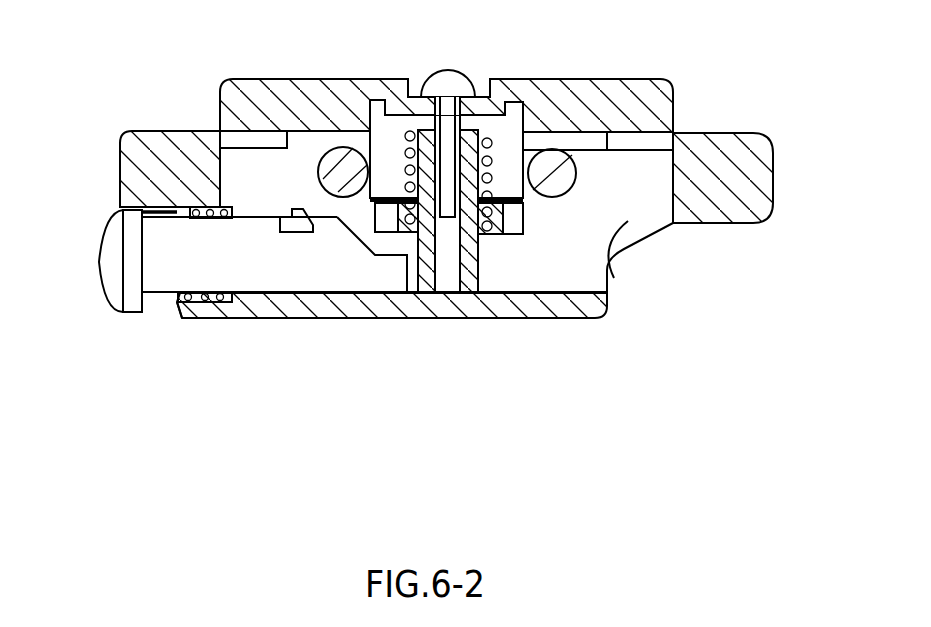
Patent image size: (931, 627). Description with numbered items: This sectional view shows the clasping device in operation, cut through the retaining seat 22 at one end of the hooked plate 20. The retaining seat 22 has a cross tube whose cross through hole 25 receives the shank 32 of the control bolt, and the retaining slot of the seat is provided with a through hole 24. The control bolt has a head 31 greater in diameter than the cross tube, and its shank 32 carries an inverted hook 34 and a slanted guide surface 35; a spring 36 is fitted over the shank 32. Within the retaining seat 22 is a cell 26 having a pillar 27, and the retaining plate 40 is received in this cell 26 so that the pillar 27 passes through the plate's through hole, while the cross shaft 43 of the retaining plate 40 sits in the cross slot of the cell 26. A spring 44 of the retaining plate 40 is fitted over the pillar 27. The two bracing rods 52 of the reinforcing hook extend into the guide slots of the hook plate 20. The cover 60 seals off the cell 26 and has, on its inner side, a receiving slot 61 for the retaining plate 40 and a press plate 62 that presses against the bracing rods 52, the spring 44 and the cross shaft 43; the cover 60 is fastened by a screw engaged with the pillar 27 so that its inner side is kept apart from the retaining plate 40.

The hooked plate 20 is at (777, 162).
The retaining seat 22 is at (578, 320).
The through hole 24 is at (182, 317).
The cross through hole 25 is at (177, 302).
The cell 26 is at (583, 218).
The pillar 27 is at (470, 270).
The head 31 is at (110, 287).
The shank 32 is at (276, 284).
The inverted hook 34 is at (302, 218).
The slanted guide surface 35 is at (358, 250).
The spring 36 is at (207, 302).
The retaining plate 40 is at (402, 232).
The cross shaft 43 is at (508, 222).
The spring 44 is at (405, 150).
The bracing rods 52 is at (332, 158).
The cover 60 is at (658, 80).
The receiving slot 61 is at (524, 97).
The press plate 62 is at (503, 150).